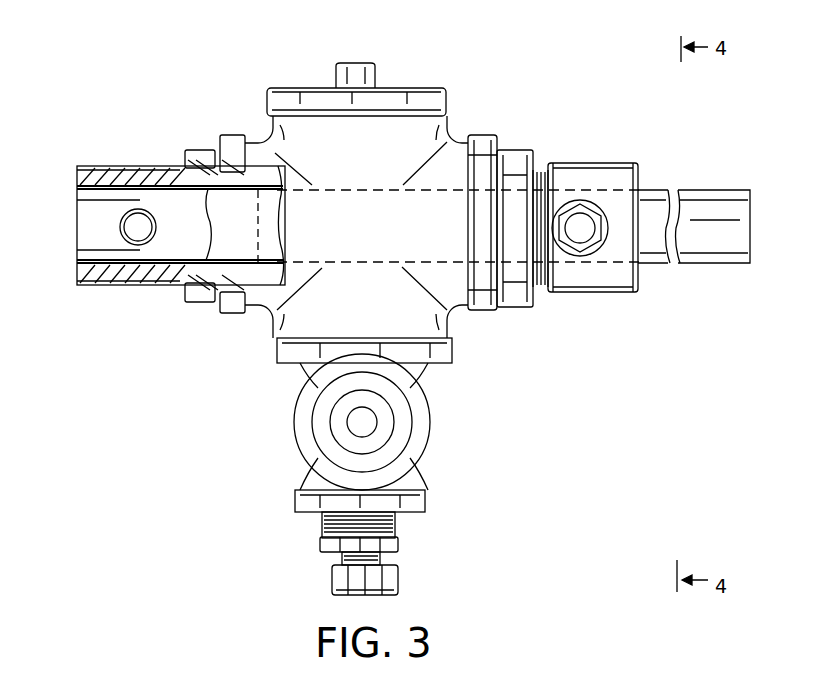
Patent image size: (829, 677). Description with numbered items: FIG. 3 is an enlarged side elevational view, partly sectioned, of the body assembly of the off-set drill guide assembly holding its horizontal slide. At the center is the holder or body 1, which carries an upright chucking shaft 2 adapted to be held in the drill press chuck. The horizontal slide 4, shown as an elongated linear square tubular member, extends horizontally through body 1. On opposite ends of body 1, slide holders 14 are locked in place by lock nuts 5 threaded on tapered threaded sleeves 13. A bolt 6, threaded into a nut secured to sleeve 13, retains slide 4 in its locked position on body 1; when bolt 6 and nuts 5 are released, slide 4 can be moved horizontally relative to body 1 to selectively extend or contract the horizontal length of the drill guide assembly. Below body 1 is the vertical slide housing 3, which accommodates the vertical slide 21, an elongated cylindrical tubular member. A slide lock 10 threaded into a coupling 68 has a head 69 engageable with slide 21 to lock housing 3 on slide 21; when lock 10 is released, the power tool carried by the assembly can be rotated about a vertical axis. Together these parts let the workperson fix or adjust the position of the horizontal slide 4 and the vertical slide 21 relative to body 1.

The body 1 is at (440, 94).
The upright chucking shaft 2 is at (372, 75).
The vertical slide housing 3 is at (298, 415).
The horizontal slide 4 is at (712, 205).
The lock nuts 5 is at (203, 158).
The bolt 6 is at (128, 232).
The slide lock 10 is at (400, 575).
The tapered threaded sleeves 13 is at (110, 290).
The slide holders 14 is at (130, 180).
The vertical slide 21 is at (398, 432).
The coupling 68 is at (322, 545).
The head 69 is at (330, 458).